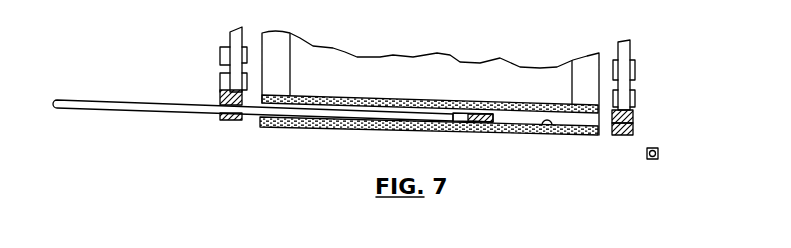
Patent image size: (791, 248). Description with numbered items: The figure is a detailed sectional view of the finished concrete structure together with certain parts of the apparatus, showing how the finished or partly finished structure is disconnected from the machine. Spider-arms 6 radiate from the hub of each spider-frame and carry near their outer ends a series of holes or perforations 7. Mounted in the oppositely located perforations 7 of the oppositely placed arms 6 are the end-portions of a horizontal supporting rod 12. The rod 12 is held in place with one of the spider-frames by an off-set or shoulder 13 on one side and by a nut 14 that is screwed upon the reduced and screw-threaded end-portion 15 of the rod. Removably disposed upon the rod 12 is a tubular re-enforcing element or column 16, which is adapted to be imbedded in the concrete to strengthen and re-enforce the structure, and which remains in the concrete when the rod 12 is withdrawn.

The arms 6 is at (230, 33).
The holes or perforations 7 is at (221, 63).
The horizontal supporting rod 12 is at (168, 112).
The off-set or shoulder 13 is at (456, 123).
The nut 14 is at (658, 158).
The reduced and screw-threaded end-portion 15 is at (487, 123).
The tubular re-enforcing element or column 16 is at (548, 129).